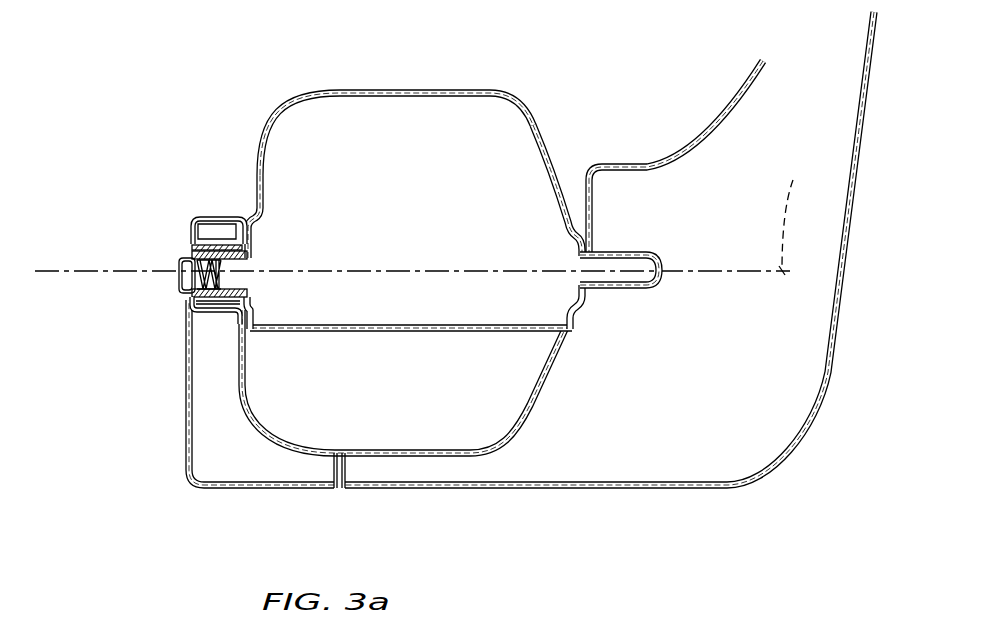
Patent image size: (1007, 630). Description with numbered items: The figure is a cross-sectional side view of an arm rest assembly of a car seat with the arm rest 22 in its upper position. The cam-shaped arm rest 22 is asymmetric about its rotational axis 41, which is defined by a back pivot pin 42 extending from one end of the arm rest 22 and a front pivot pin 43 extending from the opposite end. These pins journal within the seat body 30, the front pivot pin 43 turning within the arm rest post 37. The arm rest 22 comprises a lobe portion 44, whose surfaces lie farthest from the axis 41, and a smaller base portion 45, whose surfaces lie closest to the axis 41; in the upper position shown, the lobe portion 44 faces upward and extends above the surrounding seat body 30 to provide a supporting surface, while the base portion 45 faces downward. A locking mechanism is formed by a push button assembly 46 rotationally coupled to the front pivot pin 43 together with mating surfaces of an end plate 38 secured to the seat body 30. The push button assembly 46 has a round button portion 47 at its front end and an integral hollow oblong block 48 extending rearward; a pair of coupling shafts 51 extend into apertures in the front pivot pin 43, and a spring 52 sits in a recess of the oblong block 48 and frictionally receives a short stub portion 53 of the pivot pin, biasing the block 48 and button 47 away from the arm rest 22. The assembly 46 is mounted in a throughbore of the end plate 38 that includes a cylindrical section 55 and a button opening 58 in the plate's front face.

The arm rest 22 is at (486, 170).
The seat body 30 is at (760, 508).
The arm rest post 37 is at (187, 240).
The end plate 38 is at (188, 413).
The rotational axis 41 is at (800, 213).
The back pivot pin 42 is at (632, 257).
The front pivot pin 43 is at (248, 222).
The lobe portion 44 is at (443, 93).
The base portion 45 is at (407, 333).
The push button assembly 46 is at (174, 223).
The button portion 47 is at (176, 268).
The oblong block 48 is at (197, 221).
The coupling shafts 51 is at (221, 248).
The spring 52 is at (180, 258).
The stub portion 53 is at (224, 280).
The cylindrical section 55 is at (236, 299).
The button opening 58 is at (180, 289).